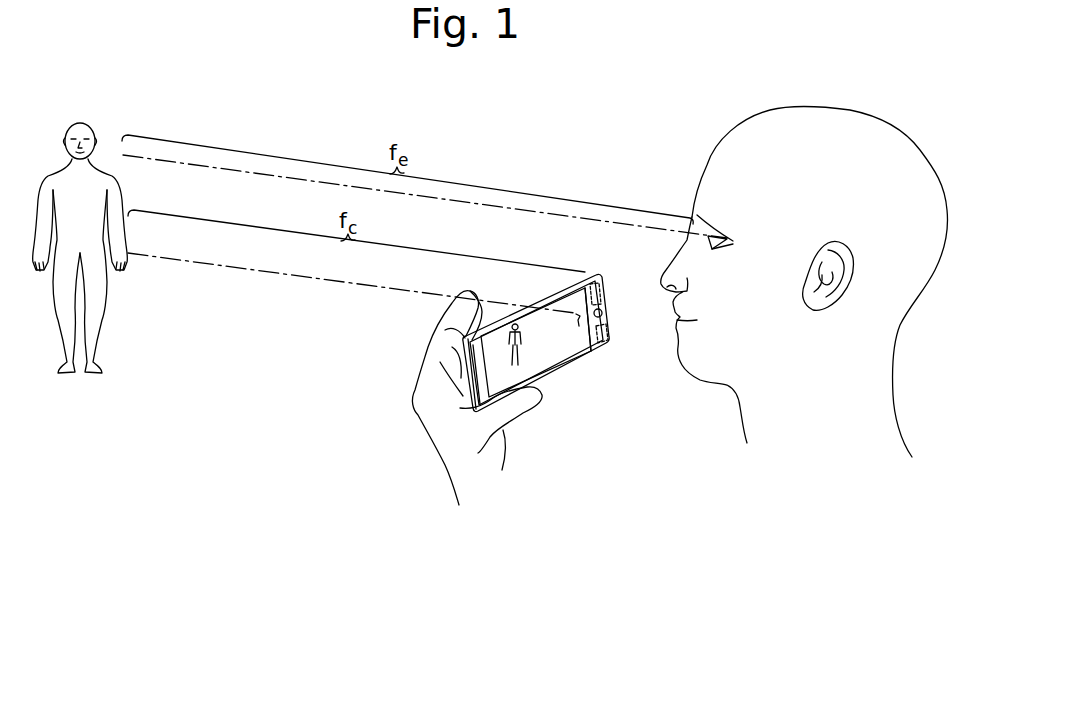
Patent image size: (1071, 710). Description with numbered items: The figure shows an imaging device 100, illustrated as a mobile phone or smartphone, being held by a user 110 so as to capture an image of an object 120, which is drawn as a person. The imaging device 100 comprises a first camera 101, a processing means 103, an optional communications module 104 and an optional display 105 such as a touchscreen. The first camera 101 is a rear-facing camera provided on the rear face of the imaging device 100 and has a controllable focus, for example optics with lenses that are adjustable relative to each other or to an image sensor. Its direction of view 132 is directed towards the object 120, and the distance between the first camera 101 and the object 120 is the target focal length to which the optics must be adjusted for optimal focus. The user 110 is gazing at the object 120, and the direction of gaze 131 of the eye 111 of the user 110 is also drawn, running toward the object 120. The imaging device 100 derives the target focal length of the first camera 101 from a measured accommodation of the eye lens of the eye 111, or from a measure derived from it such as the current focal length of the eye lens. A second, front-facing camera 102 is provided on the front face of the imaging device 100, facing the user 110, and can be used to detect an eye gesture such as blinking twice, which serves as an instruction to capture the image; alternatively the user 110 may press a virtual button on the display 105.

The imaging device 100 is at (586, 365).
The first camera 101 is at (585, 332).
The front-facing camera 102 is at (603, 312).
The processing means 103 is at (592, 270).
The communications module 104 is at (610, 340).
The display 105 is at (562, 370).
The user 110 is at (809, 122).
The eye 111 is at (722, 238).
The object 120 is at (80, 123).
The direction of gaze 131 is at (228, 171).
The direction of view 132 is at (233, 268).